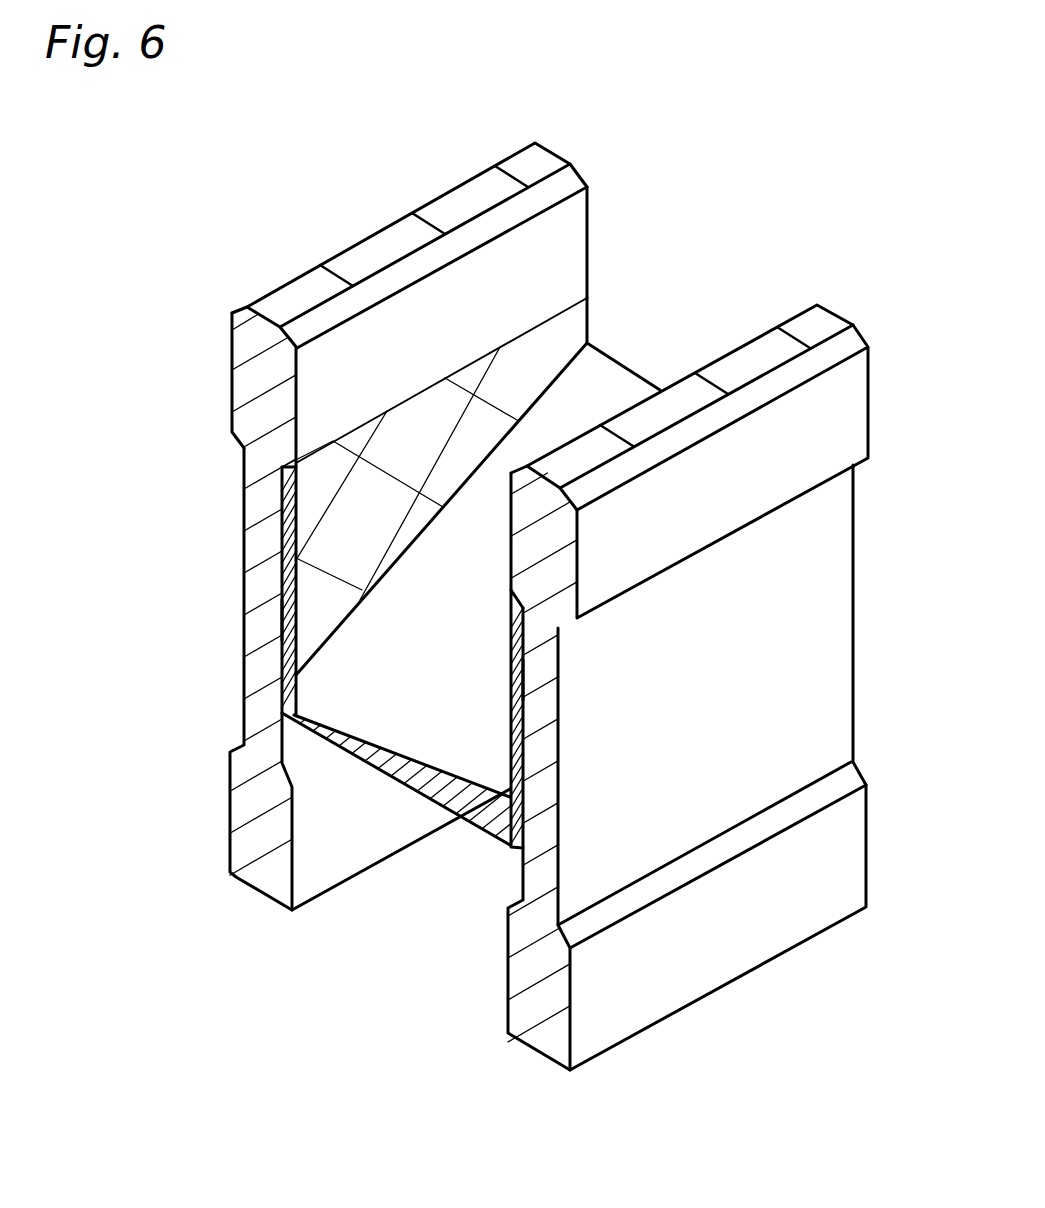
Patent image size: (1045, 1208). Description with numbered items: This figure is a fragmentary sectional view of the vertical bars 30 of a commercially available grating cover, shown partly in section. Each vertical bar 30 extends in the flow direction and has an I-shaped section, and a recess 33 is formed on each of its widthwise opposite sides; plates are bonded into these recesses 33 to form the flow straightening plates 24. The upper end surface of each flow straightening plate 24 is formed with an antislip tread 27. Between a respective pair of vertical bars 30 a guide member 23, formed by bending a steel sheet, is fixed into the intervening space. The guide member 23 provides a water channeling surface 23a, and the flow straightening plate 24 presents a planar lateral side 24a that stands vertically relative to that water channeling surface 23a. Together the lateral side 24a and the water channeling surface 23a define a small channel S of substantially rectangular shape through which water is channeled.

The vertical bar 30 is at (563, 152).
The antislip tread 27 is at (338, 280).
The flow straightening plate 24 is at (282, 625).
The planar lateral side 24a is at (320, 615).
The recess 33 is at (305, 516).
The guide member 23 is at (620, 363).
The water channeling surface 23a is at (466, 730).
The small channel S is at (618, 327).